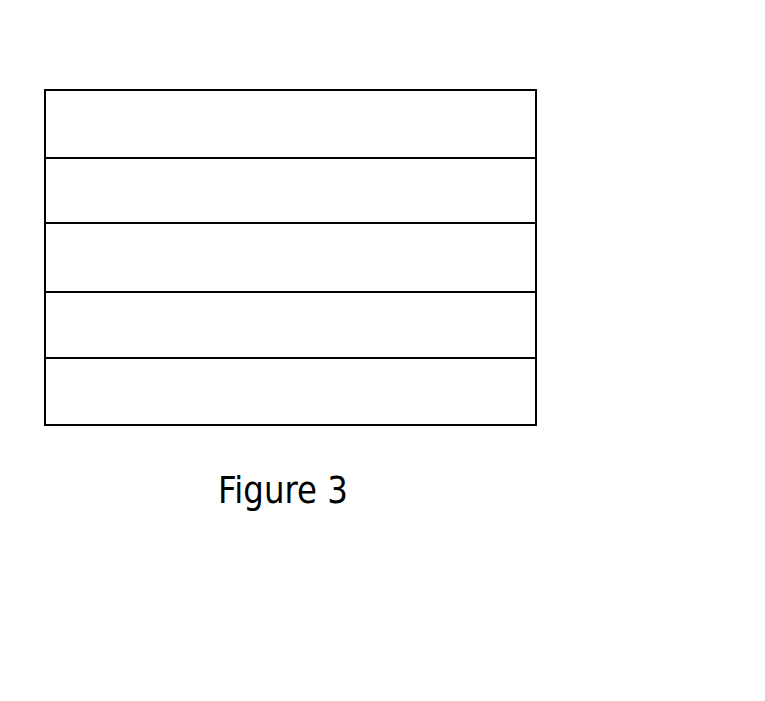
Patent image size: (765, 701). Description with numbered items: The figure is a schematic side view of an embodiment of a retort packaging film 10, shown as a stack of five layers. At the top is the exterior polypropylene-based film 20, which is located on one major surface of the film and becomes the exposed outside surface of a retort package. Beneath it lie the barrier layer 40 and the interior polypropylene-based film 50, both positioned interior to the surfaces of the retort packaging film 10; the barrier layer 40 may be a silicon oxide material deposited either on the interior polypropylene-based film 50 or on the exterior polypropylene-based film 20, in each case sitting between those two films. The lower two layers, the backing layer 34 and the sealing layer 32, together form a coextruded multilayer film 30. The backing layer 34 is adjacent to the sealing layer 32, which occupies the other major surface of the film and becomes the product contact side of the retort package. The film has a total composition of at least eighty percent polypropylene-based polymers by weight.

The retort packaging film 10 is at (410, 85).
The exterior polypropylene-based film 20 is at (306, 140).
The barrier layer 40 is at (306, 206).
The interior polypropylene-based film 50 is at (306, 274).
The coextruded multilayer film 30 is at (575, 290).
The backing layer 34 is at (306, 340).
The sealing layer 32 is at (306, 406).